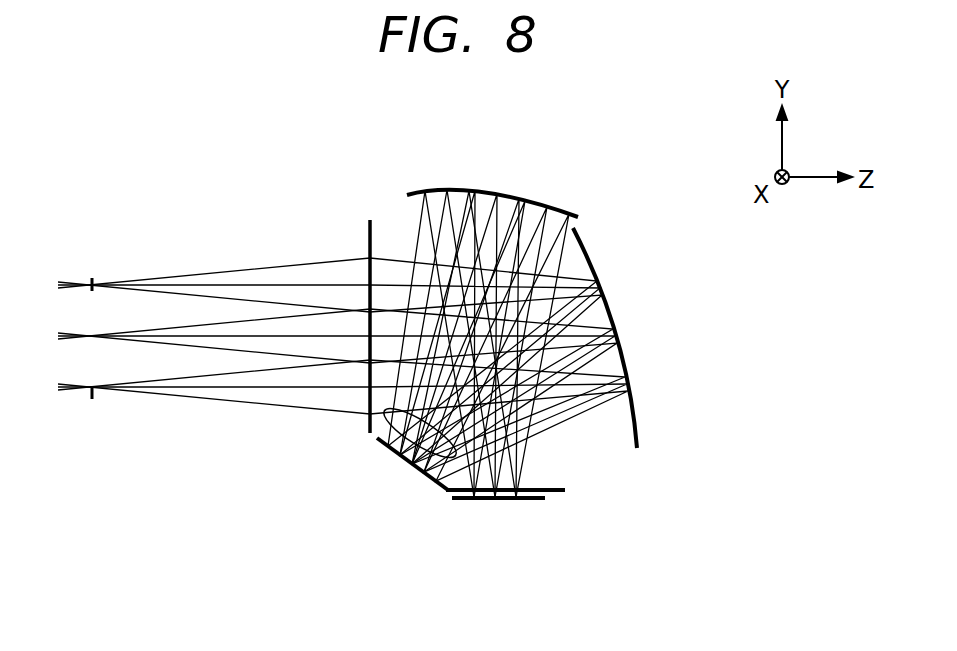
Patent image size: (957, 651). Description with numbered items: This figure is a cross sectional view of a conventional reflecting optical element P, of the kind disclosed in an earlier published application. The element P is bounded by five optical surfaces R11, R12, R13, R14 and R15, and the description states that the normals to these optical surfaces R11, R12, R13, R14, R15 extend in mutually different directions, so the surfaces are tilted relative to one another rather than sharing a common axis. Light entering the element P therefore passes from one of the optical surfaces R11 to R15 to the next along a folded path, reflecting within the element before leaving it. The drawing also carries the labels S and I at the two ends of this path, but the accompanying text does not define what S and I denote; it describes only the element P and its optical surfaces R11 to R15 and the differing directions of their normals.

The object surface S is at (92, 278).
The reflecting optical element P is at (392, 208).
The optical surface R11 is at (368, 230).
The optical surface R12 is at (594, 253).
The optical surface R13 is at (413, 466).
The optical surface R14 is at (453, 190).
The optical surface R15 is at (552, 486).
The image plane I is at (532, 502).